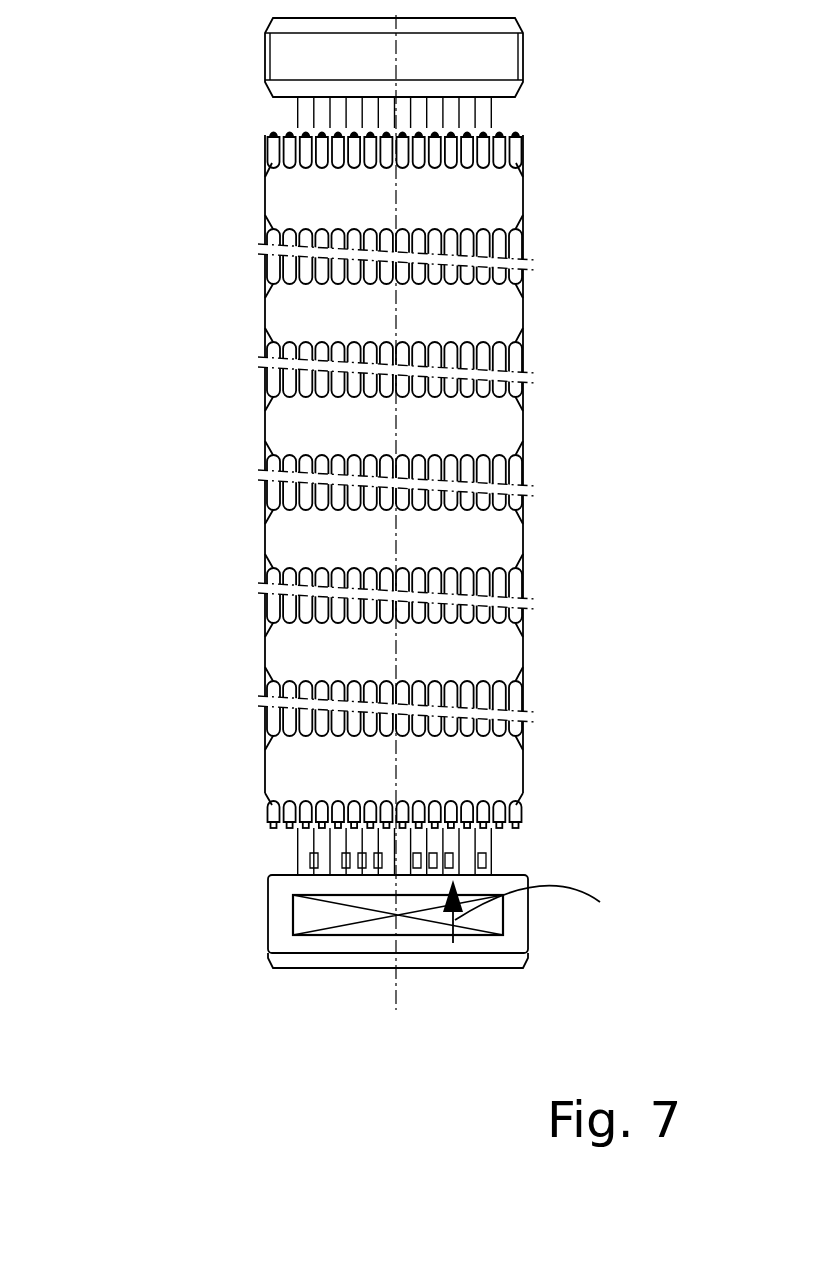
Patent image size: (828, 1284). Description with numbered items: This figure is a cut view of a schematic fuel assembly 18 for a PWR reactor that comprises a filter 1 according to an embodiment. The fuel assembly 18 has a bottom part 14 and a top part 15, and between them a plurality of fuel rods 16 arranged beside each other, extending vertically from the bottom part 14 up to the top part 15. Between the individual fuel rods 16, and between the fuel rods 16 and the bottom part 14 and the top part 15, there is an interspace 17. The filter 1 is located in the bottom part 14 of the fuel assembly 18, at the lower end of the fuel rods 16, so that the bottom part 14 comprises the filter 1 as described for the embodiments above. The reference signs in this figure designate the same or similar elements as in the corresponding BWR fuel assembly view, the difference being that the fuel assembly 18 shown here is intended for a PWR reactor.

The filter 1 is at (318, 913).
The bottom part 14 is at (428, 700).
The top part 15 is at (424, 313).
The fuel rods 16 is at (307, 700).
The interspace 17 is at (311, 272).
The fuel assembly 18 is at (373, 512).